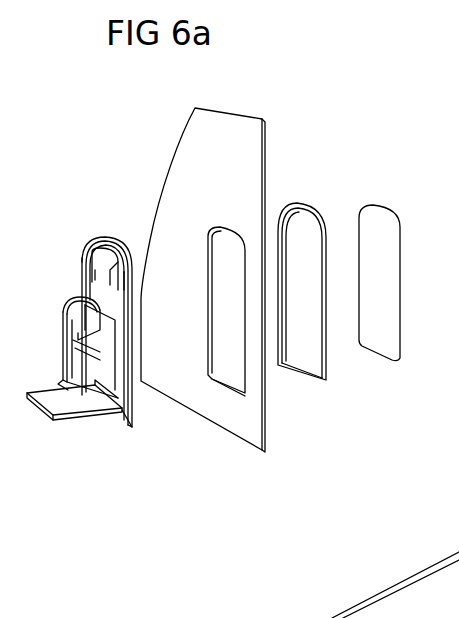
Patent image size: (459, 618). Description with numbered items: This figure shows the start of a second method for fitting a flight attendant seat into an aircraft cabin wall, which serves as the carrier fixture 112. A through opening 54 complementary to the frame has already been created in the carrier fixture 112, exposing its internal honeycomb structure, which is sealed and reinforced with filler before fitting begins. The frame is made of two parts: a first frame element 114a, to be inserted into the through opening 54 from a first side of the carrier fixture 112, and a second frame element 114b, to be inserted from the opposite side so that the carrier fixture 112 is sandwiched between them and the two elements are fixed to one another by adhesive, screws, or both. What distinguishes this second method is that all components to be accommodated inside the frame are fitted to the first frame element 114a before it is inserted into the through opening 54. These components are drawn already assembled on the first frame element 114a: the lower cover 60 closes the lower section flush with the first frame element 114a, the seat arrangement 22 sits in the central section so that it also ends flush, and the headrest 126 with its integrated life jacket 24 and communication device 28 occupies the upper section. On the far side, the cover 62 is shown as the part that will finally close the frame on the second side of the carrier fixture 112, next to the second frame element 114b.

The carrier fixture 112 is at (182, 147).
The through opening 54 is at (240, 372).
The first frame element 114a is at (133, 430).
The second frame element 114b is at (327, 380).
The cover 62 is at (374, 205).
The life jacket 24 is at (83, 258).
The headrest 126 is at (127, 288).
The communication device 28 is at (82, 285).
The seat arrangement 22 is at (77, 353).
The lower cover 60 is at (113, 422).